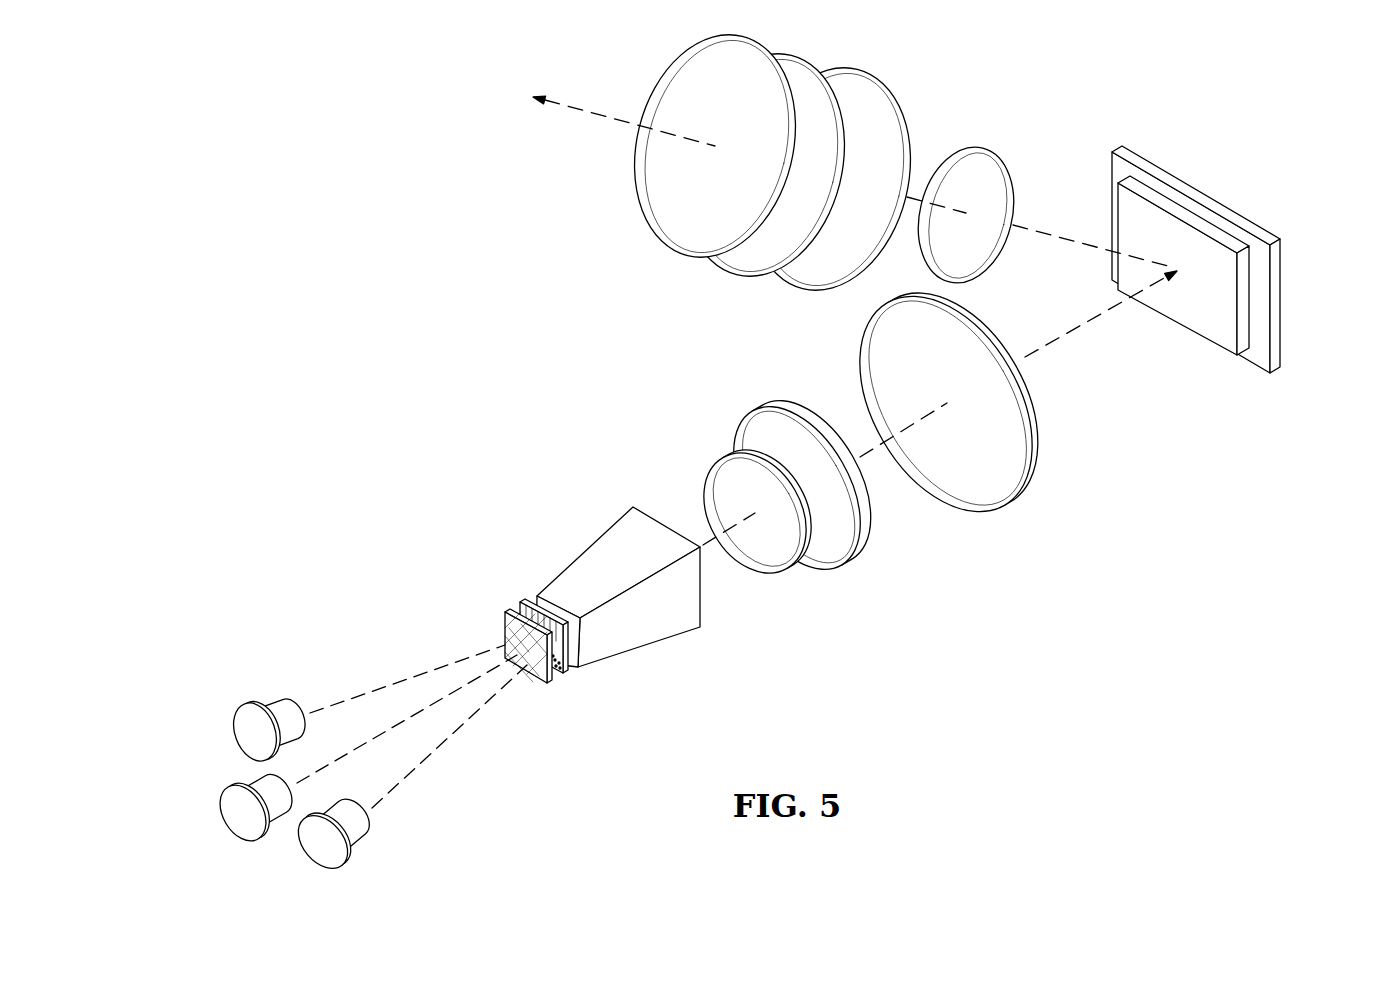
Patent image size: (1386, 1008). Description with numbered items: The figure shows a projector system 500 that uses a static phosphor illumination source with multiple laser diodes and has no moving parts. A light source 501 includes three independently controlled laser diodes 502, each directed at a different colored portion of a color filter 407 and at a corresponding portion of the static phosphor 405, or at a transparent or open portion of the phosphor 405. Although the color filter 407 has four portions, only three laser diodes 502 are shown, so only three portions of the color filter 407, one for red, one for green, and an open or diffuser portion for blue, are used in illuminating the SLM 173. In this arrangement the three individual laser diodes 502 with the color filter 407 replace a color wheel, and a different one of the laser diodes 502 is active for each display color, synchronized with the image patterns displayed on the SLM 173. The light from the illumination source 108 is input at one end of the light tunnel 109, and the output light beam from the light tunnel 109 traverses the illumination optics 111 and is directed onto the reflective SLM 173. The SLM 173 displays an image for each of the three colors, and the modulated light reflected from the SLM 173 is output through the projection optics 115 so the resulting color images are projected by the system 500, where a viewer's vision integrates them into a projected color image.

The projector system 500 is at (303, 197).
The projection optics 115 is at (709, 15).
The SLM 173 is at (1286, 302).
The illumination optics 111 is at (860, 630).
The illumination source 108 is at (429, 693).
The light tunnel 109 is at (587, 553).
The static phosphor 405 is at (498, 600).
The color filter 407 is at (562, 690).
The light source 501 is at (278, 810).
The laser diodes 502 is at (225, 821).